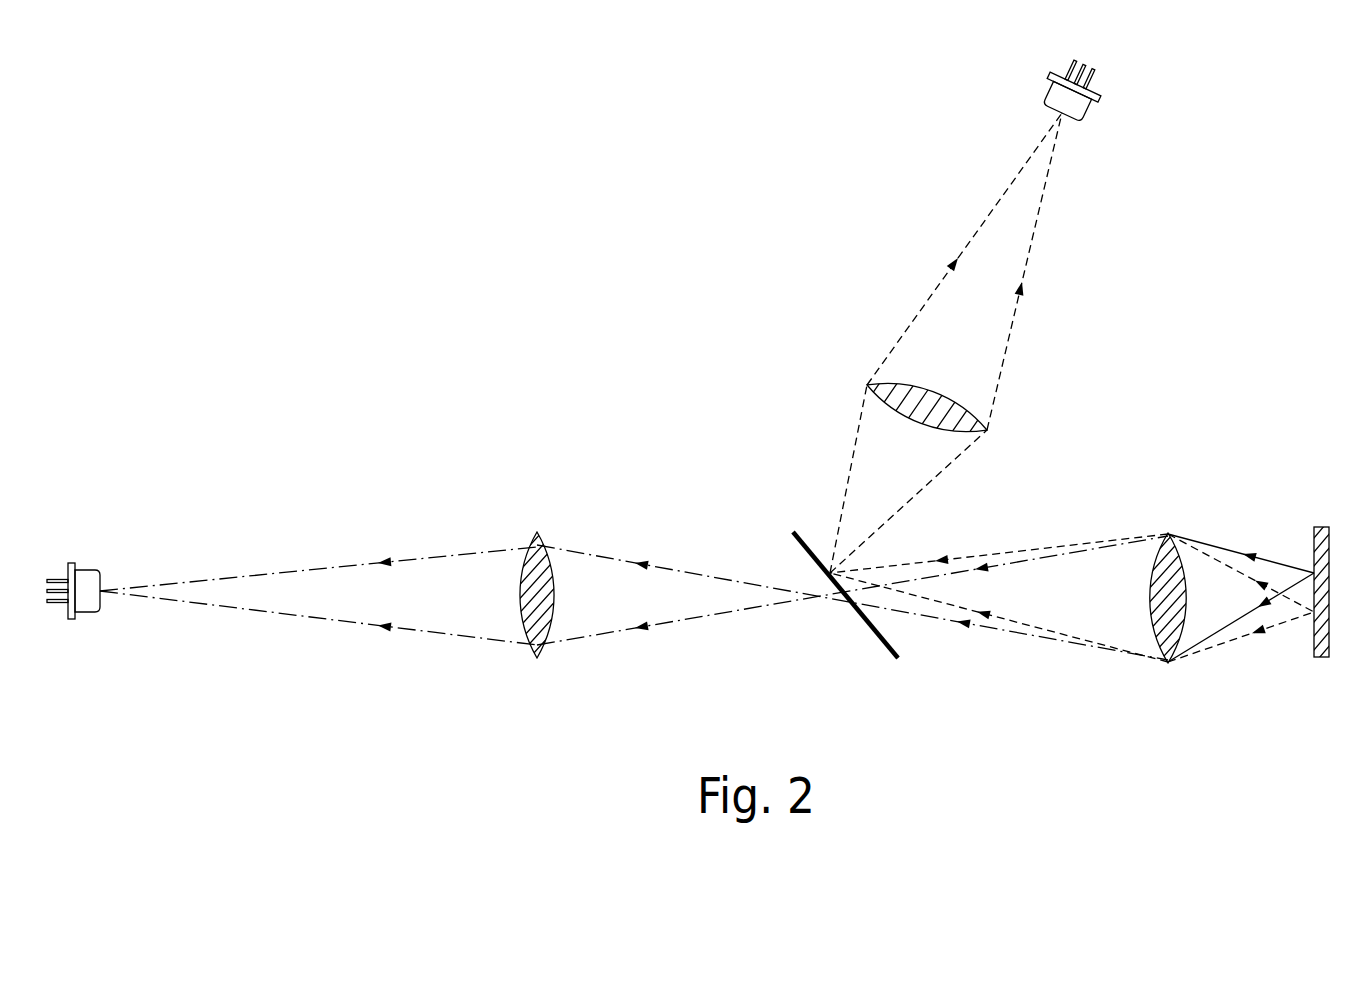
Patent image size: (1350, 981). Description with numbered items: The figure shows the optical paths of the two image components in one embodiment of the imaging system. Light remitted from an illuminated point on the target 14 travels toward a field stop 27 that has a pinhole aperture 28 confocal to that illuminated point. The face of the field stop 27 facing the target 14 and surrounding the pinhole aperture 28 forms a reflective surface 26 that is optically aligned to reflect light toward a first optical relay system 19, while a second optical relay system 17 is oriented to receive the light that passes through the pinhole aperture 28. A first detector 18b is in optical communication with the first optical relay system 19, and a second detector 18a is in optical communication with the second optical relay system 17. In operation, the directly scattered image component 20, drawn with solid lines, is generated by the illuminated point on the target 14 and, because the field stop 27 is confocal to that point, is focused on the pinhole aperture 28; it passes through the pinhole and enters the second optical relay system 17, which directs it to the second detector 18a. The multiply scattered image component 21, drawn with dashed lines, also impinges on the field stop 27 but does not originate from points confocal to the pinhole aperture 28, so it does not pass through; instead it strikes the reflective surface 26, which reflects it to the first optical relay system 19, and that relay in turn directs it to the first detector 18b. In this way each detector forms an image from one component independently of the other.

The target 14 is at (1320, 658).
The second optical relay system 17 is at (535, 657).
The second detector 18a is at (75, 617).
The first detector 18b is at (1102, 85).
The first optical relay system 19 is at (987, 422).
The directly scattered image component 20 is at (323, 566).
The multiply scattered image component 21 is at (858, 422).
The reflective surface 26 is at (805, 538).
The field stop 27 is at (898, 657).
The pinhole aperture 28 is at (850, 603).